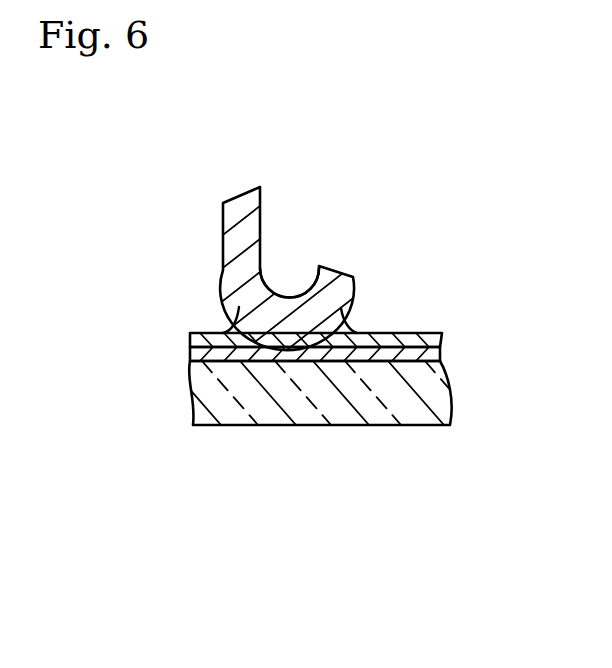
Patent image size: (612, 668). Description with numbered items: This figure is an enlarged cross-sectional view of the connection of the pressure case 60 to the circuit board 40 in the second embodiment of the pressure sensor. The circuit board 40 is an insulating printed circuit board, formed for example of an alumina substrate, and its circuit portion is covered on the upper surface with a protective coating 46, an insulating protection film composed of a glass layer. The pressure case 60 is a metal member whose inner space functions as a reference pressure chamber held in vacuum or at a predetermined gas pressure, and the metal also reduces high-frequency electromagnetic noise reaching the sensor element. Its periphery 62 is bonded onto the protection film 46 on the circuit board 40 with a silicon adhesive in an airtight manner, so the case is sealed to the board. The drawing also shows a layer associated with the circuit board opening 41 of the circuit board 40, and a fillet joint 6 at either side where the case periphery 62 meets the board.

The pressure case 60 is at (247, 218).
The periphery of the pressure case 62 is at (287, 297).
The solder fillet 6 is at (238, 330).
The protective coating 46 is at (425, 333).
The circuit board opening 41 is at (433, 349).
The circuit board 40 is at (305, 405).